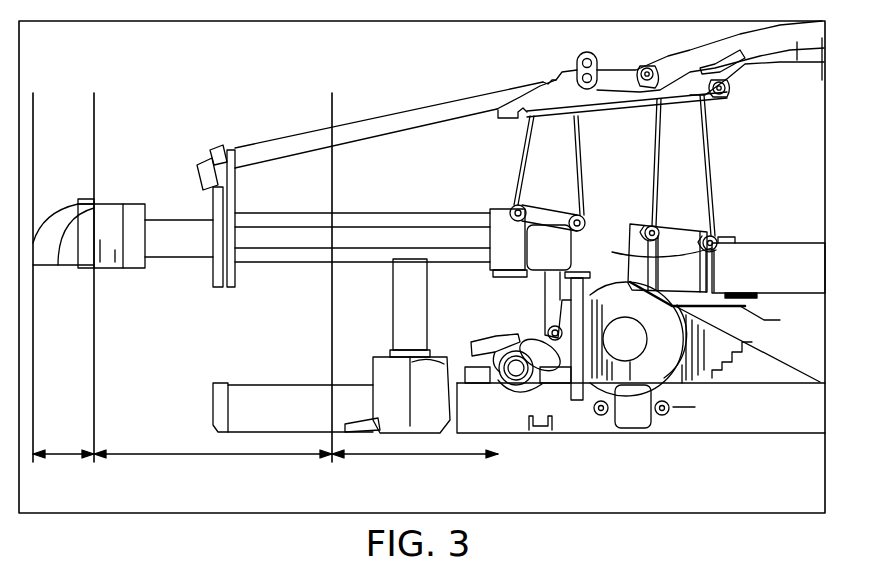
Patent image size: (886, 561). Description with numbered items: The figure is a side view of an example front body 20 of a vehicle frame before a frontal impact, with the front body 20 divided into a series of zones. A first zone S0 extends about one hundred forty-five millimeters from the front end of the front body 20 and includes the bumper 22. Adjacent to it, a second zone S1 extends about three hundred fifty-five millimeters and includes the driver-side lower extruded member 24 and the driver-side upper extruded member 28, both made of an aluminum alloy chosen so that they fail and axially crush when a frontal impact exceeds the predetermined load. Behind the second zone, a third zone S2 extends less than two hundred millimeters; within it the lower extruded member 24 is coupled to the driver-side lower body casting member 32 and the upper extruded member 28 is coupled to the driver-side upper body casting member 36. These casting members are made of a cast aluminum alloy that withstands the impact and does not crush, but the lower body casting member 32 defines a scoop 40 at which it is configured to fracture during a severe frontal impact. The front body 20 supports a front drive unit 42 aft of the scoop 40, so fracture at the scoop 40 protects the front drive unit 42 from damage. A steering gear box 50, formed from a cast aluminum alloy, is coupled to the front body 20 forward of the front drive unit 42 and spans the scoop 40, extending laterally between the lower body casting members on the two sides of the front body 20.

The front body 20 is at (386, 66).
The bumper 22 is at (58, 222).
The driver-side lower extruded member 24 is at (298, 398).
The driver-side upper extruded member 28 is at (364, 237).
The driver-side lower body casting member 32 is at (563, 420).
The driver-side upper body casting member 36 is at (716, 240).
The scoop 40 is at (502, 418).
The front drive unit 42 is at (681, 368).
The steering gear box 50 is at (470, 326).
The first zone S0 is at (66, 456).
The second zone S1 is at (215, 456).
The third zone S2 is at (399, 456).